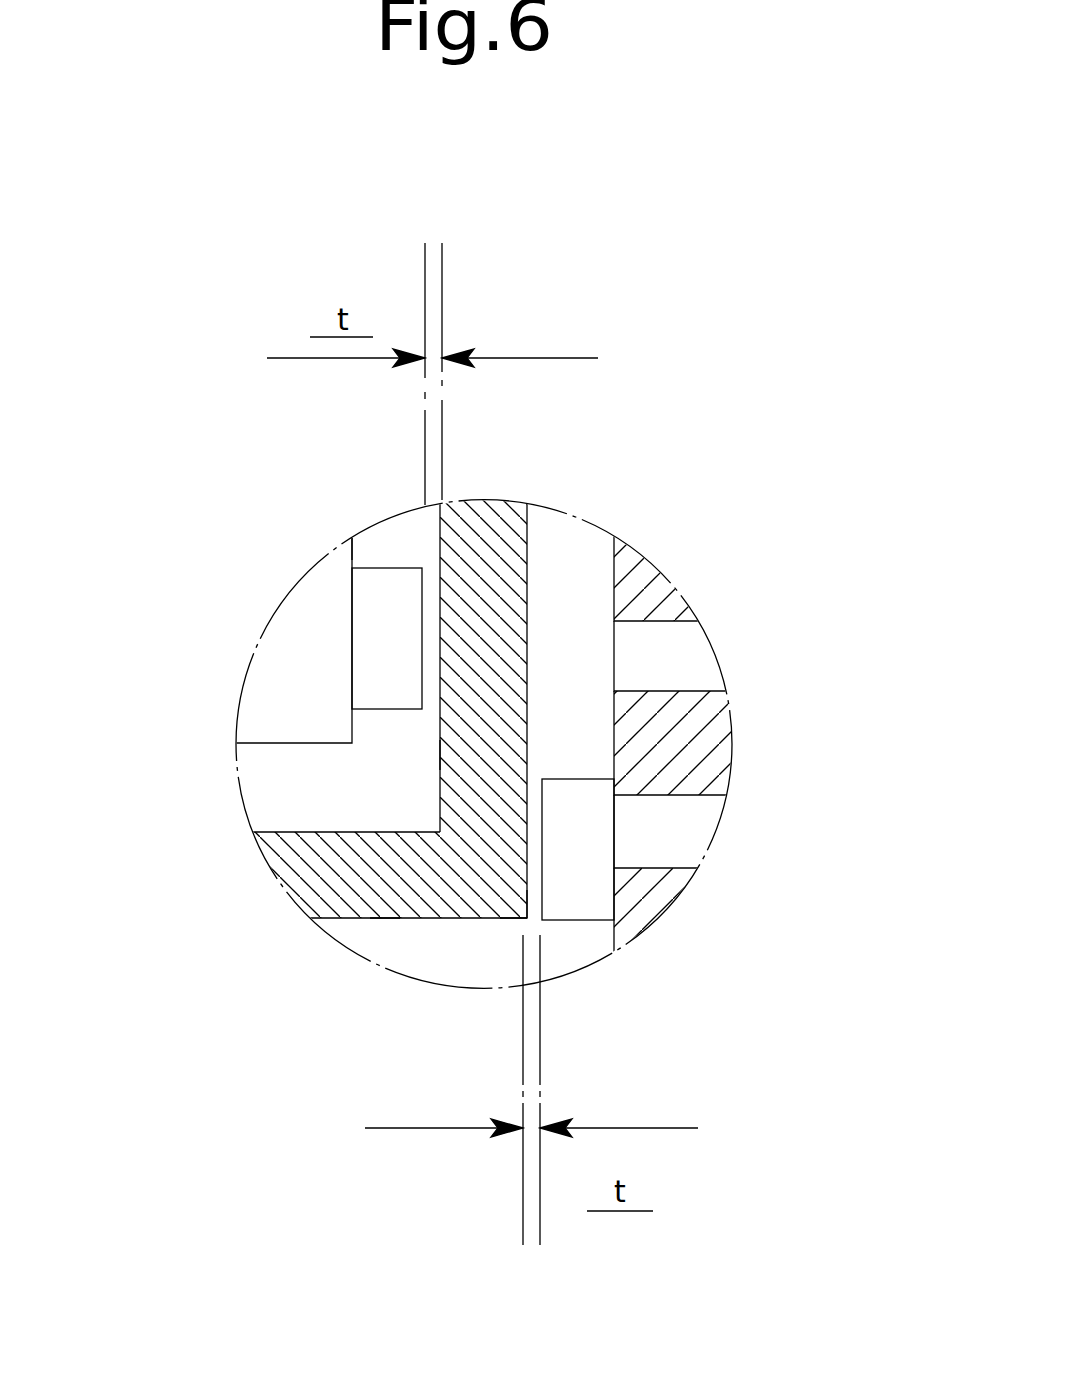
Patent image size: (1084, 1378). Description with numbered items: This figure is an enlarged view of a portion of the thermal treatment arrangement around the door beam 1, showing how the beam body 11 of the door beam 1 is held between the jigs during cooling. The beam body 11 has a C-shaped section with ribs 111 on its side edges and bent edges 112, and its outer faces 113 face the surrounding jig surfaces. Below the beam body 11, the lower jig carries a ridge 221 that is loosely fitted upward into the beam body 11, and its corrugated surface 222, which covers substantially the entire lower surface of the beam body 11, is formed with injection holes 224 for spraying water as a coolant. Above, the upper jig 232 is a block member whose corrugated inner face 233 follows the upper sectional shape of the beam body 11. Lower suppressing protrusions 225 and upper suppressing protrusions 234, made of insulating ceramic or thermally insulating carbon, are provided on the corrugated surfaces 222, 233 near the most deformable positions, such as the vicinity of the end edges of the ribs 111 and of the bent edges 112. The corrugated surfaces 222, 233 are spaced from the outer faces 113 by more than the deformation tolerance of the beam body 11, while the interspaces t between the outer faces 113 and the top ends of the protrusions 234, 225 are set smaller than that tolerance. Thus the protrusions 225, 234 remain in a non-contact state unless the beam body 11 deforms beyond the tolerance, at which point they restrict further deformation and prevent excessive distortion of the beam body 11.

The door beam 1 is at (303, 759).
The beam body 11 is at (468, 779).
The ribs 111 is at (313, 892).
The bent edges 112 is at (520, 925).
The outer faces 113 is at (438, 755).
The ridge 221 is at (697, 732).
The corrugated surface 222 is at (615, 577).
The injection holes 224 is at (657, 842).
The lower suppressing protrusions 225 is at (585, 880).
The upper jig 232 is at (246, 584).
The inner face 233 is at (355, 560).
The upper suppressing protrusions 234 is at (388, 647).